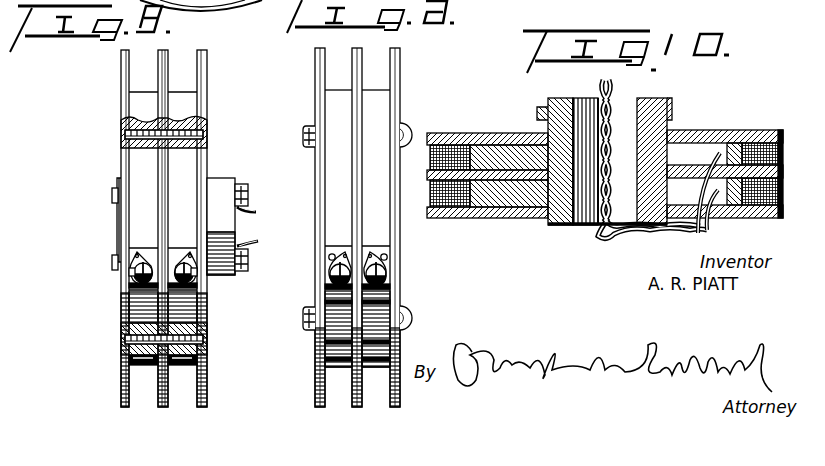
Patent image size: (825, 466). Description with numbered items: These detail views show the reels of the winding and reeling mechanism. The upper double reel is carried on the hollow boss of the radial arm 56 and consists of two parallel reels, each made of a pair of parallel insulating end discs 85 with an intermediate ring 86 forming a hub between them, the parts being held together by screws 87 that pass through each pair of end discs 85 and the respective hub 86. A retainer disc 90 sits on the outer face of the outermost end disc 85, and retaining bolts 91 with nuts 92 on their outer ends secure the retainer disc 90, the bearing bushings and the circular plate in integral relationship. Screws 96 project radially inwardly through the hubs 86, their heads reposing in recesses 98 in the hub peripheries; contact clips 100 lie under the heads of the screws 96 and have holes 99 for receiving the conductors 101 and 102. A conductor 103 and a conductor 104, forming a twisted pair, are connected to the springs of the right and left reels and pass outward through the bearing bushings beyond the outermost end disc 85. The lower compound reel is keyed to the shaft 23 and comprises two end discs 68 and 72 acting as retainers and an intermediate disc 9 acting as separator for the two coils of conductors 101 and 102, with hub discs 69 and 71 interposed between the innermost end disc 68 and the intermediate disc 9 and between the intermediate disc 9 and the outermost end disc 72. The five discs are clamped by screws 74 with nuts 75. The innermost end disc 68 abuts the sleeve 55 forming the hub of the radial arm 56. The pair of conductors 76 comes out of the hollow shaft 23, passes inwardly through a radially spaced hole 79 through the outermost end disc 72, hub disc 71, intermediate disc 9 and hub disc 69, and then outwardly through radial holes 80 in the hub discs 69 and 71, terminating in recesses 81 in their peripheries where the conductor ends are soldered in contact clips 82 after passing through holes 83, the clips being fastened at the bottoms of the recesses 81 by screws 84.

In FIG. 9, the intermediate disc 9 is at (357, 70).
In FIG. 10, the intermediate disc 9 is at (428, 180).
In FIG. 10, the shaft 23 is at (636, 228).
In FIG. 10, the sleeve 55 is at (550, 100).
In FIG. 10, the radial arm 56 is at (670, 108).
In FIG. 9, the end disc 68 is at (318, 56).
In FIG. 10, the end disc 68 is at (467, 135).
In FIG. 9, the hub disc 69 is at (338, 100).
In FIG. 10, the hub disc 69 is at (500, 157).
In FIG. 9, the hub disc 71 is at (372, 98).
In FIG. 10, the hub disc 71 is at (493, 200).
In FIG. 9, the end disc 72 is at (401, 55).
In FIG. 10, the end disc 72 is at (517, 213).
In FIG. 9, the screws 74 is at (409, 318).
In FIG. 9, the nuts 75 is at (304, 320).
In FIG. 10, the conductors 76 is at (610, 212).
In FIG. 10, the hole 79 is at (715, 208).
In FIG. 9, the holes 80 is at (388, 256).
In FIG. 10, the holes 80 is at (733, 147).
In FIG. 9, the recesses 81 is at (329, 273).
In FIG. 9, the contact clips 82 is at (381, 260).
In FIG. 9, the holes 83 is at (368, 253).
In FIG. 9, the screws 84 is at (383, 275).
In FIG. 8, the end discs 85 is at (202, 63).
In FIG. 8, the intermediate ring 86 is at (183, 100).
In FIG. 8, the screws 87 is at (227, 340).
In FIG. 8, the retainer disc 90 is at (118, 214).
In FIG. 8, the retaining bolts 91 is at (111, 260).
In FIG. 8, the nuts 92 is at (243, 266).
In FIG. 8, the screws 96 is at (199, 288).
In FIG. 8, the recesses 98 is at (150, 258).
In FIG. 8, the holes 99 is at (190, 252).
In FIG. 8, the contact clips 100 is at (197, 272).
In FIG. 10, the conductor 101 is at (430, 157).
In FIG. 10, the conductor 102 is at (428, 193).
In FIG. 8, the conductor 103 is at (251, 213).
In FIG. 8, the conductor 104 is at (251, 244).